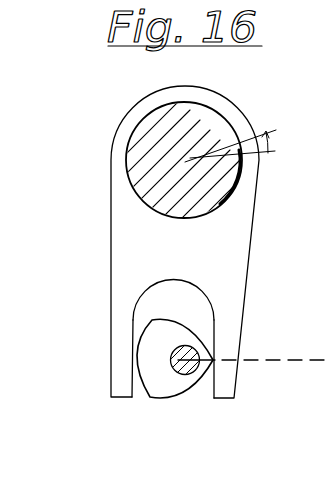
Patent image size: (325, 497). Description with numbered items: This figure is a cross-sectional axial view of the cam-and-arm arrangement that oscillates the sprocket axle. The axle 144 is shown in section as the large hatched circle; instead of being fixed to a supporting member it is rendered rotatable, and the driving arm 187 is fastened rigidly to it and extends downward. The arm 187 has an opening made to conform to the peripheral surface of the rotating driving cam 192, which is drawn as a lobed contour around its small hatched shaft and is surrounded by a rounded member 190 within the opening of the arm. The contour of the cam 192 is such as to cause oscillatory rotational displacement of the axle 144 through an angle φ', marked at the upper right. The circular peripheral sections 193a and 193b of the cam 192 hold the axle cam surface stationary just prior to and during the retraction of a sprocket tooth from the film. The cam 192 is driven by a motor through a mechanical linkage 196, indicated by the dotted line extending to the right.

The axle 144 is at (135, 134).
The driving arm 187 is at (111, 236).
The follower member 190 is at (203, 313).
The driving cam 192 is at (214, 352).
The circular peripheral section 193a is at (137, 390).
The circular peripheral section 193b is at (209, 381).
The mechanical linkage 196 is at (299, 363).